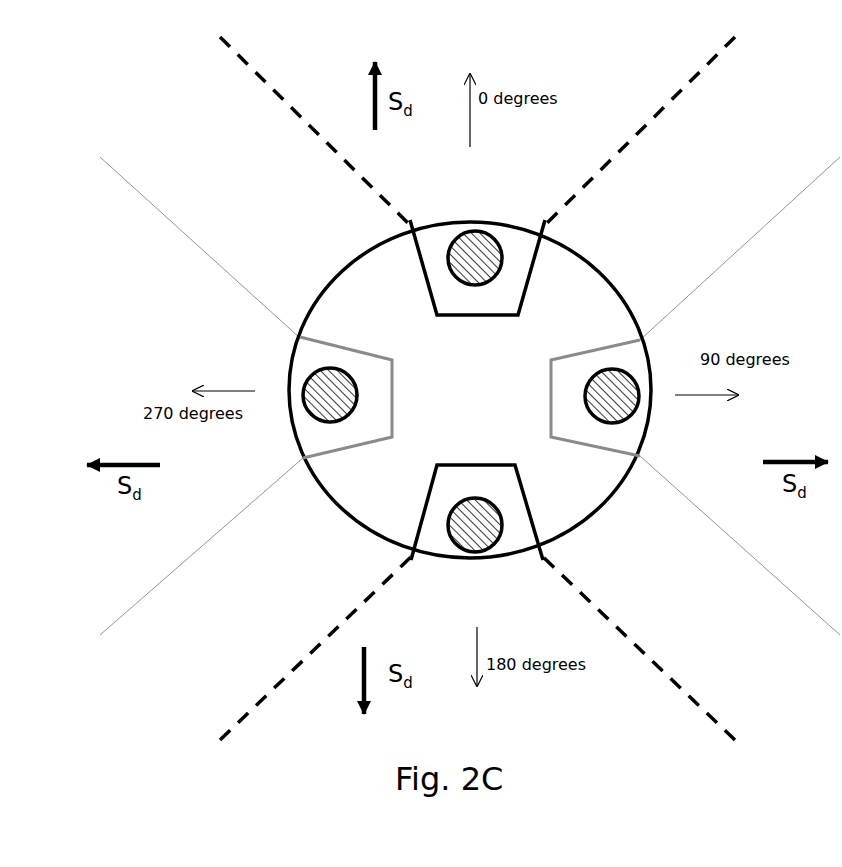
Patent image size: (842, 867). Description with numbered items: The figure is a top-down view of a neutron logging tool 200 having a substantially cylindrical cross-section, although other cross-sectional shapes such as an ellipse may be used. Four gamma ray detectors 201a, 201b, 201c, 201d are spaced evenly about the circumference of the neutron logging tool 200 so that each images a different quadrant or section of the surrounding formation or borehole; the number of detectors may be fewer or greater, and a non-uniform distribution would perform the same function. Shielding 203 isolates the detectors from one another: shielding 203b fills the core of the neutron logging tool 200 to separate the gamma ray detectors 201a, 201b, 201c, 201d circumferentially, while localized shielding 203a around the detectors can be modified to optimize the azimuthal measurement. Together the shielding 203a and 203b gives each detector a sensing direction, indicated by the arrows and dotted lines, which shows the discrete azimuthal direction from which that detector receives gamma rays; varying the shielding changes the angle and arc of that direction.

The neutron logging tool 200 is at (358, 243).
The gamma ray detector 201a is at (480, 232).
The gamma ray detector 201b is at (638, 400).
The gamma ray detector 201c is at (503, 532).
The gamma ray detector 201d is at (304, 390).
The shielding 203 is at (558, 321).
The localized shielding 203a is at (540, 270).
The core shielding 203b is at (407, 460).